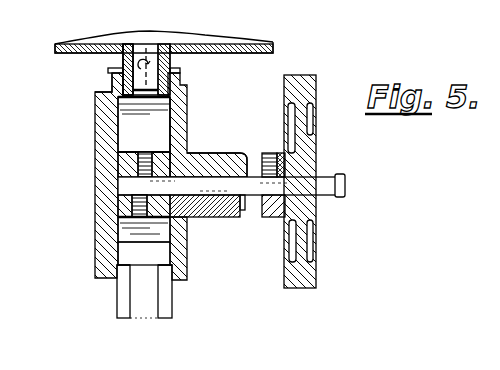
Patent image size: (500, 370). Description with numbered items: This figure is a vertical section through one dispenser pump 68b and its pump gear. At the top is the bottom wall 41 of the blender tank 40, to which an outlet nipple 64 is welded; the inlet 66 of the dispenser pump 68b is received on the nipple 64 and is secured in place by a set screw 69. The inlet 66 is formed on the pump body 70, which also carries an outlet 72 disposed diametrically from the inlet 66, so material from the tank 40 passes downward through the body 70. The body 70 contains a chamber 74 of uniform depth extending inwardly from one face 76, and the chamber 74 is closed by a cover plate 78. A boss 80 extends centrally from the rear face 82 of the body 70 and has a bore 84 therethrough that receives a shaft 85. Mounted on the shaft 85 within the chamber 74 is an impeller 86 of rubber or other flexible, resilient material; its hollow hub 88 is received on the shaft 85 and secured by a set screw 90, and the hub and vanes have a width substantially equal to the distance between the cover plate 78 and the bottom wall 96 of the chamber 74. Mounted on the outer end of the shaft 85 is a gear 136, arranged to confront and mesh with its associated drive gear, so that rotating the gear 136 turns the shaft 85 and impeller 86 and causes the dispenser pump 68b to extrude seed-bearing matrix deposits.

The blender tank 40 is at (178, 44).
The bottom wall 41 is at (208, 46).
The set screw 69 is at (138, 44).
The outlet nipple 64 is at (127, 60).
The inlet 66 is at (180, 76).
The dispenser pump 68b is at (196, 121).
The face 76 is at (110, 93).
The chamber 74 is at (118, 118).
The cover plate 78 is at (97, 163).
The set screw 90 is at (142, 151).
The bottom wall 96 is at (172, 140).
The boss 80 is at (215, 153).
The shaft 85 is at (334, 177).
The impeller 86 is at (118, 202).
The hollow hub 88 is at (122, 228).
The rear face 82 is at (184, 241).
The bore 84 is at (240, 200).
The body 70 is at (174, 248).
The outlet 72 is at (172, 298).
The gear 136 is at (317, 115).